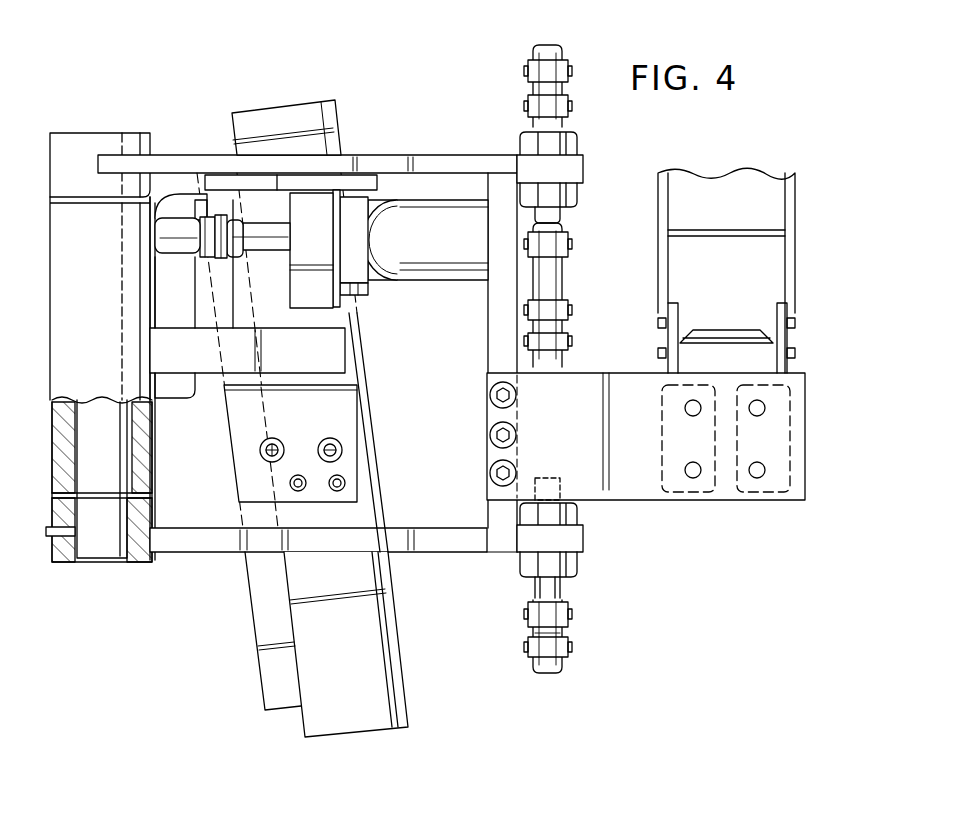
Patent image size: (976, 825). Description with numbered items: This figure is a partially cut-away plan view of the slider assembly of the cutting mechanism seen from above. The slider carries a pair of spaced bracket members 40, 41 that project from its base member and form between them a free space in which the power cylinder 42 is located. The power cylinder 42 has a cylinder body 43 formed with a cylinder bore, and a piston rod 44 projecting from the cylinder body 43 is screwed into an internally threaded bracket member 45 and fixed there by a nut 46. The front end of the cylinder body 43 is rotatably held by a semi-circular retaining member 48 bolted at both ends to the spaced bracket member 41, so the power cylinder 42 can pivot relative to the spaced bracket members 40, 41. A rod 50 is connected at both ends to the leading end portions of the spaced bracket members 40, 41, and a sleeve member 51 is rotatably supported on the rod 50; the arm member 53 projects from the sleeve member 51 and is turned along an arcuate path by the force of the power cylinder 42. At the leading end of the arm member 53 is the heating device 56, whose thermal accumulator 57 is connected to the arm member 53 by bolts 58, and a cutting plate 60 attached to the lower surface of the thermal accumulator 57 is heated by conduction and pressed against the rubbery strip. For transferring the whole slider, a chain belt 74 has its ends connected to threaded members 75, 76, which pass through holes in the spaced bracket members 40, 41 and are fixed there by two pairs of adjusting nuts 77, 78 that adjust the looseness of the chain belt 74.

The spaced bracket member 40 is at (433, 528).
The spaced bracket member 41 is at (447, 155).
The power cylinder 42 is at (423, 286).
The cylinder body 43 is at (457, 272).
The piston rod 44 is at (268, 252).
The internally threaded bracket member 45 is at (173, 253).
The nut 46 is at (208, 223).
The retaining member 48 is at (297, 297).
The rod 50 is at (90, 489).
The sleeve member 51 is at (108, 325).
The arm member 53 is at (213, 375).
The heating device 56 is at (226, 479).
The thermal accumulator 57 is at (236, 457).
The bolts 58 is at (326, 442).
The cutting plate 60 is at (258, 630).
The chain belt 74 is at (563, 633).
The threaded member 75 is at (563, 587).
The threaded member 76 is at (565, 213).
The adjusting nuts 77 is at (577, 561).
The adjusting nuts 78 is at (576, 194).